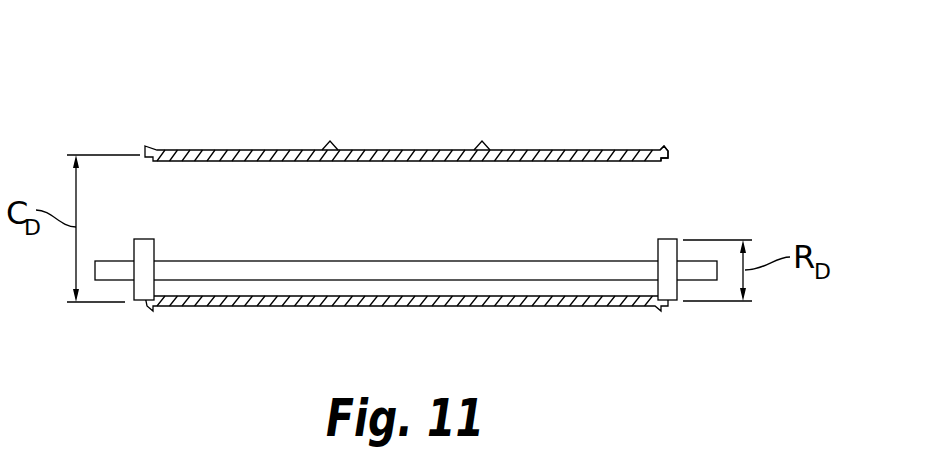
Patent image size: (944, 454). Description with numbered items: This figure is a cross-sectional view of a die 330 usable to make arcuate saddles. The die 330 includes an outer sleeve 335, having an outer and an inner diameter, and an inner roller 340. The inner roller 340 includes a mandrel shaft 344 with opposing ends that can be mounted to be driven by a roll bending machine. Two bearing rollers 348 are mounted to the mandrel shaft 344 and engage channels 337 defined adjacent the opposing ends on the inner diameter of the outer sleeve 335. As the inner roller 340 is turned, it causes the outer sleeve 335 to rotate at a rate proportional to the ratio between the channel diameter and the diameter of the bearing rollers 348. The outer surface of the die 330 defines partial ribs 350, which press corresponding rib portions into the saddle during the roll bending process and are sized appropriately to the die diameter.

The die 330 is at (534, 103).
The outer sleeve 335 is at (612, 150).
The channels 337 is at (668, 160).
The partial ribs 350 is at (330, 149).
The bearing rollers 348 is at (143, 252).
The mandrel shaft 344 is at (215, 273).
The inner roller 340 is at (508, 281).